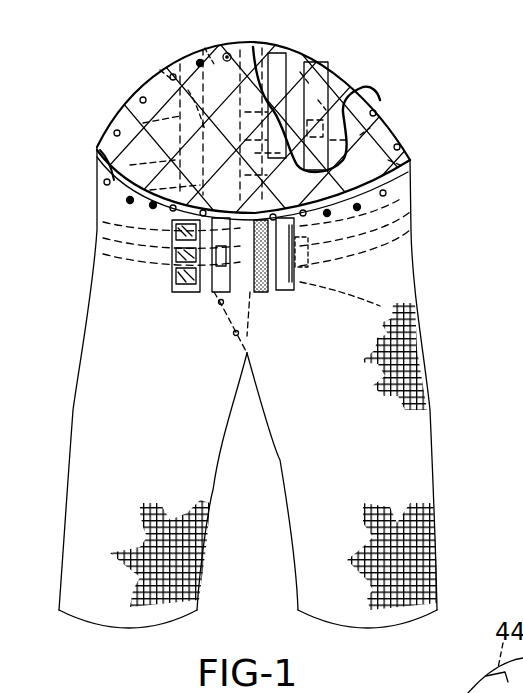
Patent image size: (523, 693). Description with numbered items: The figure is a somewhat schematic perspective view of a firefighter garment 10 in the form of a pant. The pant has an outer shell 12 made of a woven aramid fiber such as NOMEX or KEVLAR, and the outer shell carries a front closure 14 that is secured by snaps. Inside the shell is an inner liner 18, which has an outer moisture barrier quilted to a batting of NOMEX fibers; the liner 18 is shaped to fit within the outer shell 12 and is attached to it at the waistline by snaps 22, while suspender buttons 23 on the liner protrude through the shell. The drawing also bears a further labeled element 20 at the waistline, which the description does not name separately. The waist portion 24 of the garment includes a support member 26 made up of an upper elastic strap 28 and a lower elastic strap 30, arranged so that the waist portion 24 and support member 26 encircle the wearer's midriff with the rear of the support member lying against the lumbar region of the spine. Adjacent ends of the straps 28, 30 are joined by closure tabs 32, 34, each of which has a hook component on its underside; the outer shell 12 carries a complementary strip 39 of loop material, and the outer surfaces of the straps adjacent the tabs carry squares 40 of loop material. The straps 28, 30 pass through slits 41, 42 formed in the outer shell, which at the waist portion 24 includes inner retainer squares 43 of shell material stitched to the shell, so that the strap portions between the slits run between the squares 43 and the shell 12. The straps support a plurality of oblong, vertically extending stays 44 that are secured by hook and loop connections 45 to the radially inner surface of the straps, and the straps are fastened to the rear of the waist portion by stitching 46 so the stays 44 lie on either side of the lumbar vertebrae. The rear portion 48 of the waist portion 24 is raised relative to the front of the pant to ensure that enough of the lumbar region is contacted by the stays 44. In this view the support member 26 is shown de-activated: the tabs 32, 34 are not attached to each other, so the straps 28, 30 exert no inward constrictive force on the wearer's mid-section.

The firefighter garment 10 is at (428, 230).
The outer shell 12 is at (393, 289).
The front closure 14 is at (246, 354).
The inner liner 18 is at (146, 121).
The waistband 20 is at (405, 143).
The snaps 22 is at (142, 99).
The suspender buttons 23 is at (228, 52).
The waist portion 24 is at (410, 202).
The support member 26 is at (148, 257).
The upper elastic strap 28 is at (340, 118).
The lower elastic strap 30 is at (408, 163).
The closure tab 32 is at (213, 292).
The closure tab 34 is at (285, 289).
The strip of loop material 39 is at (262, 292).
The squares of loop material 40 is at (172, 250).
The slit 41 is at (174, 236).
The slit 42 is at (305, 275).
The inner retainer squares 43 is at (405, 303).
The stays 44 is at (306, 70).
The hook and loop connections 45 is at (338, 122).
The stitching 46 is at (208, 44).
The rear portion 48 is at (188, 90).